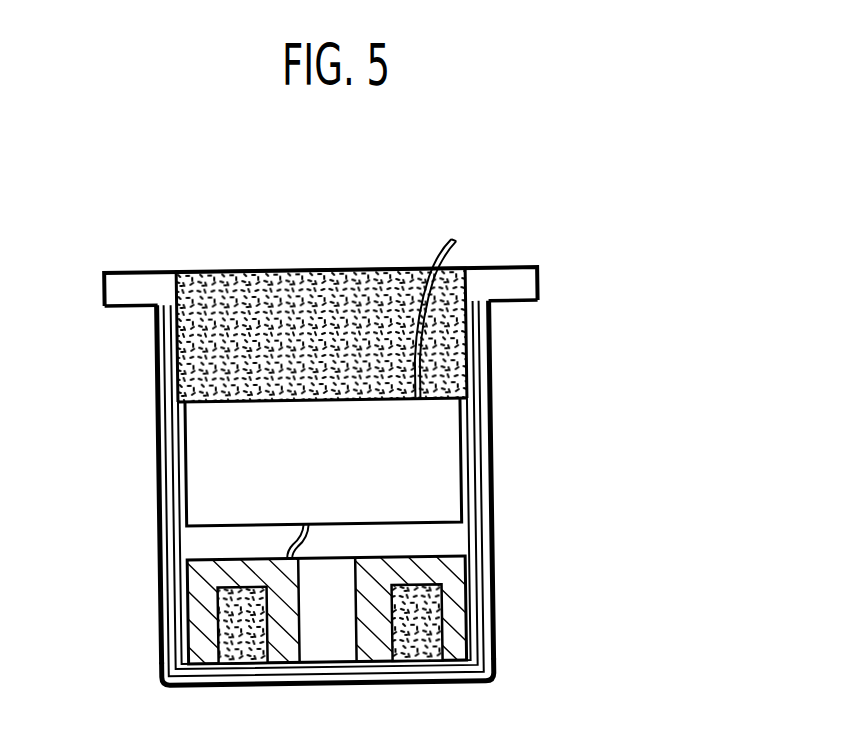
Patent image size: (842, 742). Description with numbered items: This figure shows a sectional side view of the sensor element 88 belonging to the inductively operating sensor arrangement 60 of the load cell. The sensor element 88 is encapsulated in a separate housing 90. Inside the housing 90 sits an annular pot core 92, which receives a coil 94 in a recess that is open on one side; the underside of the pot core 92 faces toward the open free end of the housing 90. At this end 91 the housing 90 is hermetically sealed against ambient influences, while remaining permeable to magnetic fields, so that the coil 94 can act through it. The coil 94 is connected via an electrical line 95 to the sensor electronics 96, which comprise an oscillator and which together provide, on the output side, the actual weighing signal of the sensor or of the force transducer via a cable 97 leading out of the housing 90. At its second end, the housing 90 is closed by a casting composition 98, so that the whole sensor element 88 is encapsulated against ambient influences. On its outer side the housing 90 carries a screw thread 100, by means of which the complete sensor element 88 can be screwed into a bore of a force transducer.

The sensor arrangement 60 is at (588, 320).
The sensor element 88 is at (124, 444).
The housing 90 is at (157, 344).
The end of housing 91 is at (149, 697).
The annular pot core 92 is at (445, 572).
The coil 94 is at (433, 623).
The electrical line 95 is at (284, 538).
The sensor electronics 96 is at (442, 495).
The cable 97 is at (432, 262).
The casting composition 98 is at (307, 316).
The screw thread 100 is at (157, 402).